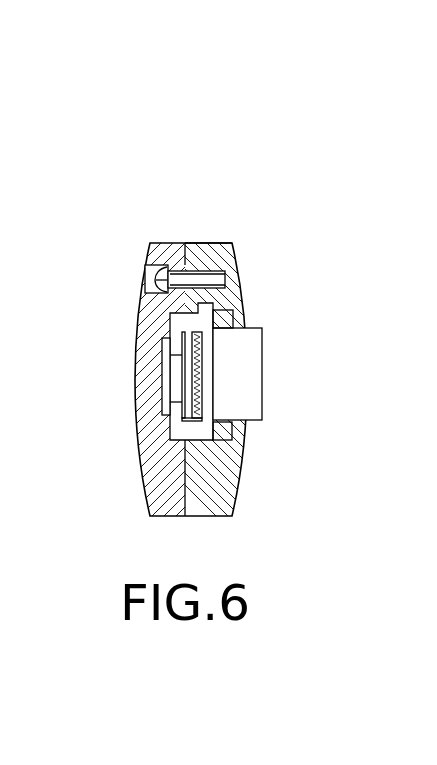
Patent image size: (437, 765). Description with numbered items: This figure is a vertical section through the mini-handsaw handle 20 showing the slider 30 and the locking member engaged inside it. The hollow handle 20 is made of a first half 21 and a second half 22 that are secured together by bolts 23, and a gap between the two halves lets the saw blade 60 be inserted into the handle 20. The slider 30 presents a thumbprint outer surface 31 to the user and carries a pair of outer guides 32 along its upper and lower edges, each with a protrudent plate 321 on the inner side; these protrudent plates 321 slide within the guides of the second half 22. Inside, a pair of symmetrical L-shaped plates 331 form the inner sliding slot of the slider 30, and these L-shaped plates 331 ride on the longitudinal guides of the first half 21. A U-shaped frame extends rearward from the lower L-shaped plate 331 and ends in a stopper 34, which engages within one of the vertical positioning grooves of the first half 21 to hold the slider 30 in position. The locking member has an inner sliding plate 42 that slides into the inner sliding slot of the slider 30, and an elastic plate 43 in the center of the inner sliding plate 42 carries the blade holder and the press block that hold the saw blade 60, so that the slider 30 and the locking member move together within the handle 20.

The handle 20 is at (193, 184).
The first half 21 is at (150, 251).
The second half 22 is at (235, 255).
The bolts 23 is at (225, 281).
The slider 30 is at (267, 385).
The thumbprint outer surface 31 is at (262, 355).
The outer guides 32 is at (233, 312).
The protrudent plate 321 is at (232, 450).
The L-shaped plates 331 is at (150, 440).
The stopper 34 is at (167, 348).
The saw blade 60 is at (167, 385).
The inner sliding plate 42 is at (167, 412).
The elastic plate 43 is at (114, 379).